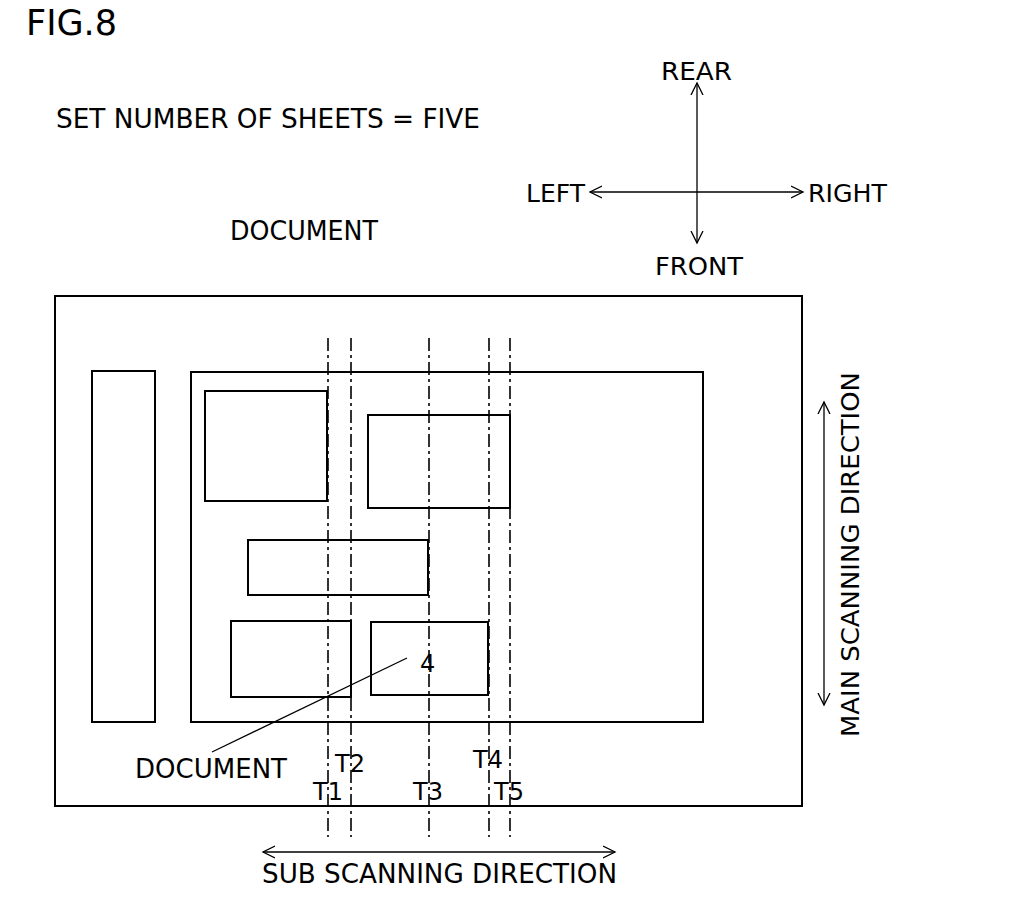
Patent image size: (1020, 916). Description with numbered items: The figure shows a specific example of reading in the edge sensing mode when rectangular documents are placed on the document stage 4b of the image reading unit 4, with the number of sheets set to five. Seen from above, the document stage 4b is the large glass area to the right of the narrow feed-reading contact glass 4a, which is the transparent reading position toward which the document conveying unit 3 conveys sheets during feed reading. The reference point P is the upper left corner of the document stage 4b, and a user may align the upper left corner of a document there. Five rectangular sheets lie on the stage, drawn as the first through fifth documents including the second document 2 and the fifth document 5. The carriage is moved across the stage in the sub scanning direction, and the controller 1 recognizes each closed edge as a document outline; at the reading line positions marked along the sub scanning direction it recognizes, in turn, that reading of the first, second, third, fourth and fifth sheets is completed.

The image reading unit 4 is at (530, 313).
The feed-reading contact glass 4a is at (112, 707).
The document stage 4b is at (688, 466).
The reference point P is at (189, 368).
The controller 1 is at (248, 412).
The second document 2 is at (270, 658).
The document conveying unit 3 is at (290, 550).
The fifth document 5 is at (408, 455).